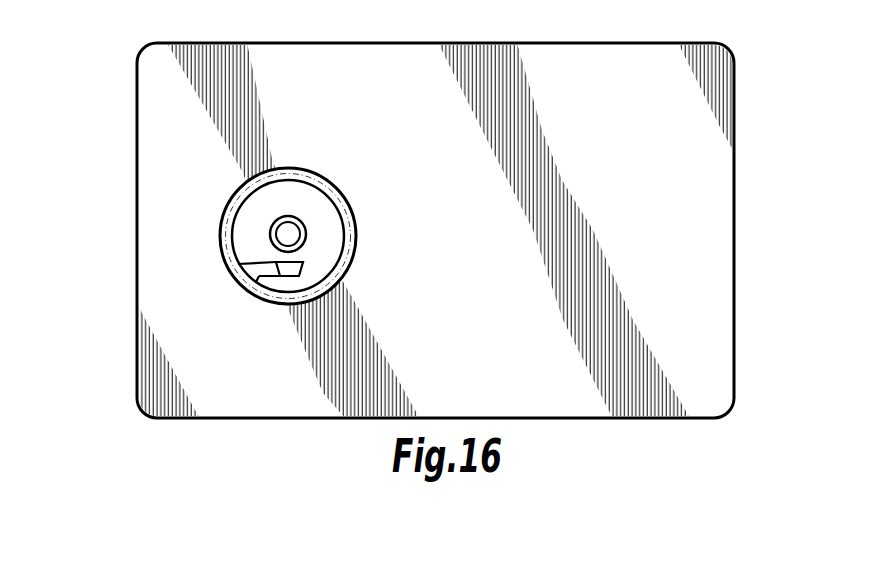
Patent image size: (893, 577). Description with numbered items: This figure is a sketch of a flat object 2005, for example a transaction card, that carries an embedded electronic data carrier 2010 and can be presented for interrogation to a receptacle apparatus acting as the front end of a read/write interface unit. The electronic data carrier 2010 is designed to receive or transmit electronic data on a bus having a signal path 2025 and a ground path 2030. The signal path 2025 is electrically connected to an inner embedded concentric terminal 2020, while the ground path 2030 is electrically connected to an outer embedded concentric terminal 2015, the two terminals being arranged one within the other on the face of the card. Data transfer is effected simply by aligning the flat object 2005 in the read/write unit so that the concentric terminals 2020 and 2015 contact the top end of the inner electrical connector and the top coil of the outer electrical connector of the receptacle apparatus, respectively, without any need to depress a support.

The flat object 2005 is at (735, 230).
The electronic data carrier 2010 is at (246, 266).
The concentric terminal 2015 is at (232, 278).
The concentric terminal 2020 is at (274, 222).
The signal path 2025 is at (304, 252).
The ground path 2030 is at (283, 304).